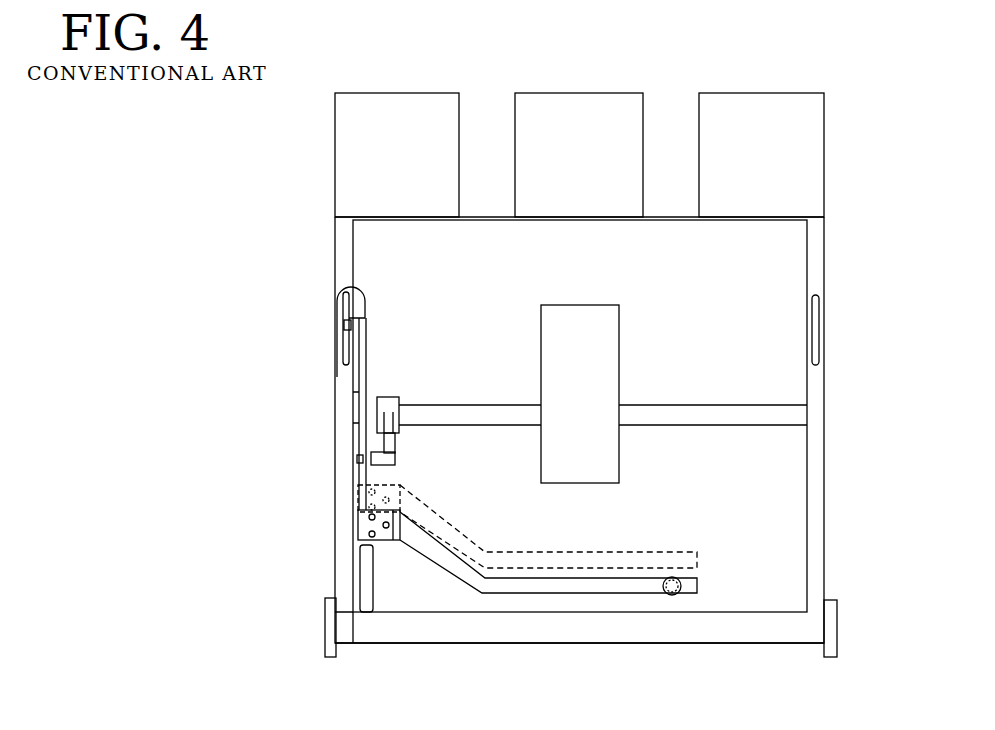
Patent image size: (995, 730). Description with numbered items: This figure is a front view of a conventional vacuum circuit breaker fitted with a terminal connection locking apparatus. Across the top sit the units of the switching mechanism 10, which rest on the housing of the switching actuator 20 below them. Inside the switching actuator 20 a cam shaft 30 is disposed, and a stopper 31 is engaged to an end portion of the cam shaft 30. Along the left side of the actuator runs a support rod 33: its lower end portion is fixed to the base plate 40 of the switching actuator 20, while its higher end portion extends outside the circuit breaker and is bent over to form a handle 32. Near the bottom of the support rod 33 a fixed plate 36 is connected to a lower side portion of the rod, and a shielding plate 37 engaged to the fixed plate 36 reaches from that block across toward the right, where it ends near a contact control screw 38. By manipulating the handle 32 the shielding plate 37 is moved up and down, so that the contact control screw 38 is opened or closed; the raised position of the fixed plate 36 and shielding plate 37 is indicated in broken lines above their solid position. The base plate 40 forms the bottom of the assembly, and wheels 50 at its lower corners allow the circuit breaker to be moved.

The switching mechanism 10 is at (410, 156).
The switching actuator 20 is at (372, 263).
The cam shaft 30 is at (435, 420).
The stopper 31 is at (378, 393).
The handle 32 is at (336, 287).
The support rod 33 is at (368, 372).
The fixed plate 36 is at (358, 522).
The shielding plate 37 is at (600, 587).
The contact control screw 38 is at (672, 596).
The base plate 40 is at (427, 628).
The wheels 50 is at (838, 607).